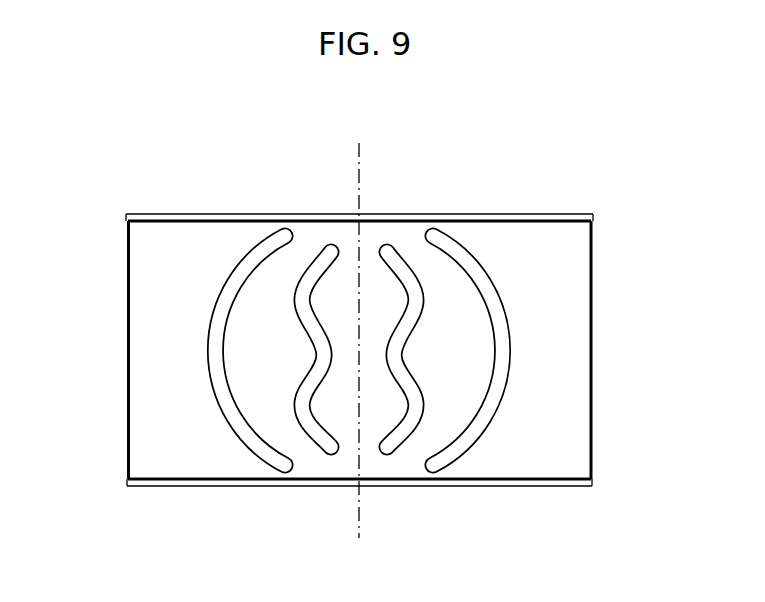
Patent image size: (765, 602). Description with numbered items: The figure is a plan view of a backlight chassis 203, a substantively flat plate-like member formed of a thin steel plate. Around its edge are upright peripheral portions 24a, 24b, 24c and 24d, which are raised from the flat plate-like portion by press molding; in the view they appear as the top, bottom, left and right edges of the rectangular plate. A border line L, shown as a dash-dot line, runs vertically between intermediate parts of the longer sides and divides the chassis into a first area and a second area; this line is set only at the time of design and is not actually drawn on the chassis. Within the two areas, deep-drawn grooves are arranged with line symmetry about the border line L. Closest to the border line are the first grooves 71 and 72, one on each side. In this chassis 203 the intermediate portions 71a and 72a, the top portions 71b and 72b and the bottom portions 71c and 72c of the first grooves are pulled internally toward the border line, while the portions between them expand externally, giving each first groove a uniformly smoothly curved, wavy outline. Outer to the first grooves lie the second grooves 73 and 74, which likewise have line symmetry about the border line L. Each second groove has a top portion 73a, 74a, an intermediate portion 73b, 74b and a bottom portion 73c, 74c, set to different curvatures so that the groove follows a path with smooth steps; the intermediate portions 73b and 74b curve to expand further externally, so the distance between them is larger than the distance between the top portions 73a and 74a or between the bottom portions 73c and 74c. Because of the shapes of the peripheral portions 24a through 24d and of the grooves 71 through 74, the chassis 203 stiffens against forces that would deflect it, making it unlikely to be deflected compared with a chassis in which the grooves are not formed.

The backlight chassis 203 is at (531, 198).
The peripheral portion 24a is at (192, 218).
The peripheral portion 24b is at (180, 485).
The peripheral portion 24c is at (128, 338).
The peripheral portion 24d is at (590, 338).
The border line L is at (361, 530).
The first groove 71 is at (295, 320).
The intermediate portion 71a is at (320, 351).
The top portion 71b is at (328, 256).
The bottom portion 71c is at (328, 446).
The first groove 72 is at (480, 308).
The intermediate portion 72a is at (398, 351).
The top portion 72b is at (390, 256).
The bottom portion 72c is at (390, 446).
The second groove 73 is at (213, 292).
The top portion 73a is at (278, 233).
The intermediate portion 73b is at (212, 351).
The bottom portion 73c is at (278, 468).
The second groove 74 is at (507, 292).
The top portion 74a is at (439, 233).
The intermediate portion 74b is at (505, 352).
The bottom portion 74c is at (440, 468).